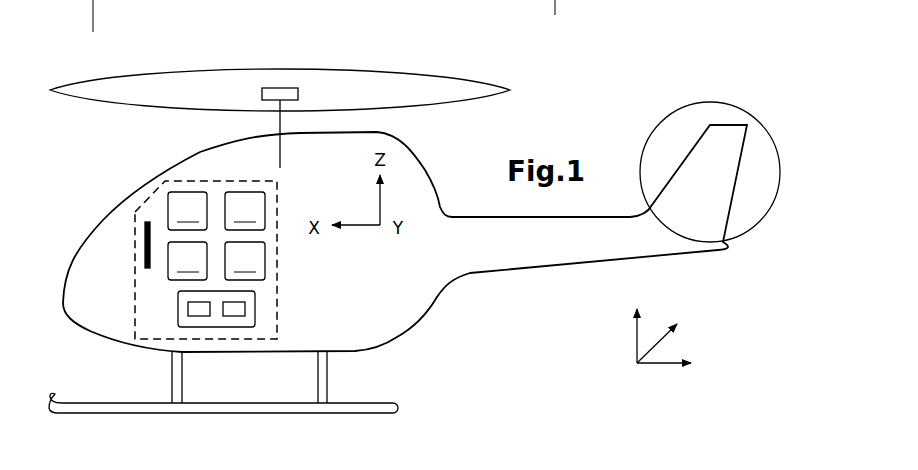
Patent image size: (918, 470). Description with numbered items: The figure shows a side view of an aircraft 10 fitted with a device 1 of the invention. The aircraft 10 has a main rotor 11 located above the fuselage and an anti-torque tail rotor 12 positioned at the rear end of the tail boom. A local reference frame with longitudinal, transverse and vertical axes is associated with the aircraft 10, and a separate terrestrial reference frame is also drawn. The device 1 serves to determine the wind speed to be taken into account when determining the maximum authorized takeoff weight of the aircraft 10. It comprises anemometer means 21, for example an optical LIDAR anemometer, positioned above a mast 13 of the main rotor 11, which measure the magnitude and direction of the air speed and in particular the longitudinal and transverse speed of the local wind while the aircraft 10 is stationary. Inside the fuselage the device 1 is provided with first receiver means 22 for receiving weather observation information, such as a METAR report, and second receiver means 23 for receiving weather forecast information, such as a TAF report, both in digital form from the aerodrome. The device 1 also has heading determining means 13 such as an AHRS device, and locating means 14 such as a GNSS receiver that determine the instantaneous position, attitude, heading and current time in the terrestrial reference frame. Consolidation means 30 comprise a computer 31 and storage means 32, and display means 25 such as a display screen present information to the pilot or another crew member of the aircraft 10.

The device 1 is at (135, 282).
The aircraft 10 is at (494, 344).
The main rotor 11 is at (453, 74).
The anti-torque tail rotor 12 is at (715, 102).
The mast / heading determining means 13 is at (285, 102).
The locating means 14 is at (187, 261).
The anemometer means 21 is at (275, 88).
The first receiver means 22 is at (245, 211).
The second receiver means 23 is at (245, 261).
The display means 25 is at (140, 243).
The consolidation means 30 is at (224, 332).
The computer 31 is at (188, 304).
The storage means 32 is at (245, 309).